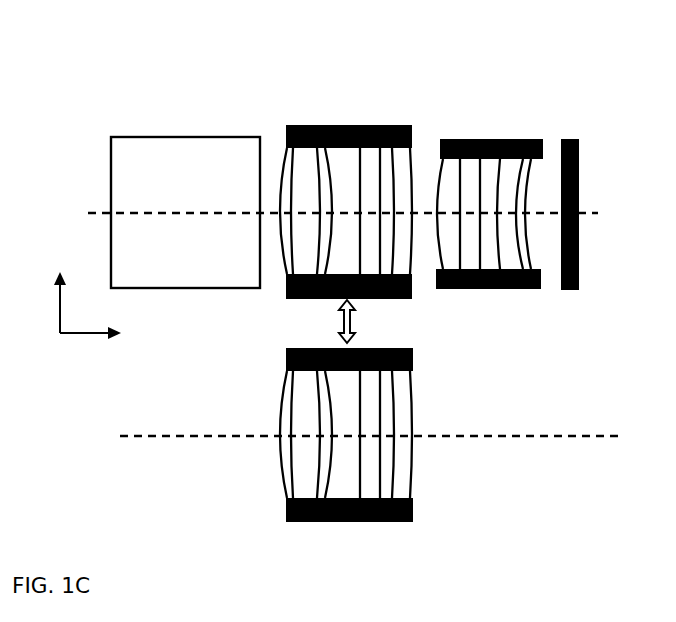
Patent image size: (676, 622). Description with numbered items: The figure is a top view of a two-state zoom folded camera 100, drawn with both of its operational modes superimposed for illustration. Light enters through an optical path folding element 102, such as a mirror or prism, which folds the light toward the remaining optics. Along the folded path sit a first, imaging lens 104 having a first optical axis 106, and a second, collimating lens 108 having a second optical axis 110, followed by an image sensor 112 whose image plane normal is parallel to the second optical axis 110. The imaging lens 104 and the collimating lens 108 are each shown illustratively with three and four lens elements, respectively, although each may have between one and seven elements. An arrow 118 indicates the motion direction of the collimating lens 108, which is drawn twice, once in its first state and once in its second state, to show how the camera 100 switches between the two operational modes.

The two-state zoom folded camera 100 is at (112, 38).
The optical path folding element 102 is at (170, 152).
The imaging lens 104 is at (481, 139).
The first optical axis 106 is at (427, 213).
The collimating lens 108 is at (287, 509).
The second optical axis 110 is at (516, 436).
The image sensor 112 is at (570, 139).
The arrow 118 is at (342, 318).